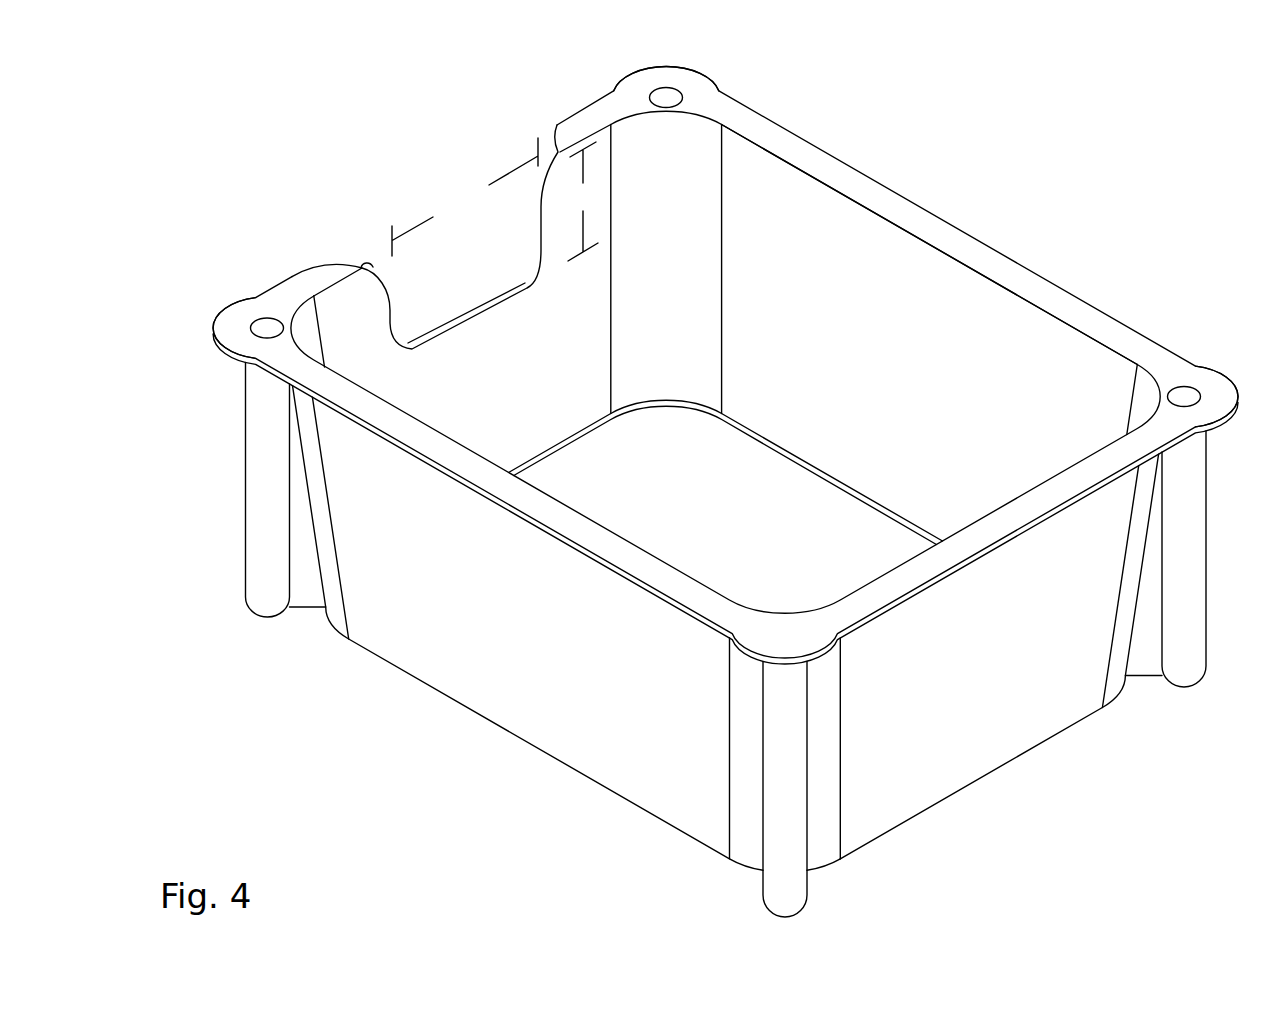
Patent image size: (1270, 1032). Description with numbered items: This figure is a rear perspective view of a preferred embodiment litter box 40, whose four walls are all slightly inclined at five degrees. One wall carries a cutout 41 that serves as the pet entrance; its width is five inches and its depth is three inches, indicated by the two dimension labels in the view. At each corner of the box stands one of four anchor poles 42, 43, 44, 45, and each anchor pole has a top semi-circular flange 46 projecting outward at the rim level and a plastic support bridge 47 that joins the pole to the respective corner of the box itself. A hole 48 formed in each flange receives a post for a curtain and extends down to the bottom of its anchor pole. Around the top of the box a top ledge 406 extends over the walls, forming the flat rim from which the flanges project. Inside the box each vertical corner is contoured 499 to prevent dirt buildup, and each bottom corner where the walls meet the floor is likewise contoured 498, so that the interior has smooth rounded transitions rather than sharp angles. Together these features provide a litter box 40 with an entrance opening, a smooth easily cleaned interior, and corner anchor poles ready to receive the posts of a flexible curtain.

The litter box 40 is at (950, 122).
The cutout 41 is at (455, 292).
The anchor pole 42 is at (262, 598).
The anchor pole 43 is at (786, 882).
The anchor pole 44 is at (1190, 675).
The anchor pole 45 is at (705, 67).
The top semi-circular flange 46 is at (252, 312).
The plastic support bridge 47 is at (1152, 660).
The hole 48 is at (1186, 392).
The top ledge 406 is at (1012, 525).
The contoured bottom corner 498 is at (673, 405).
The contoured inside corner 499 is at (705, 172).